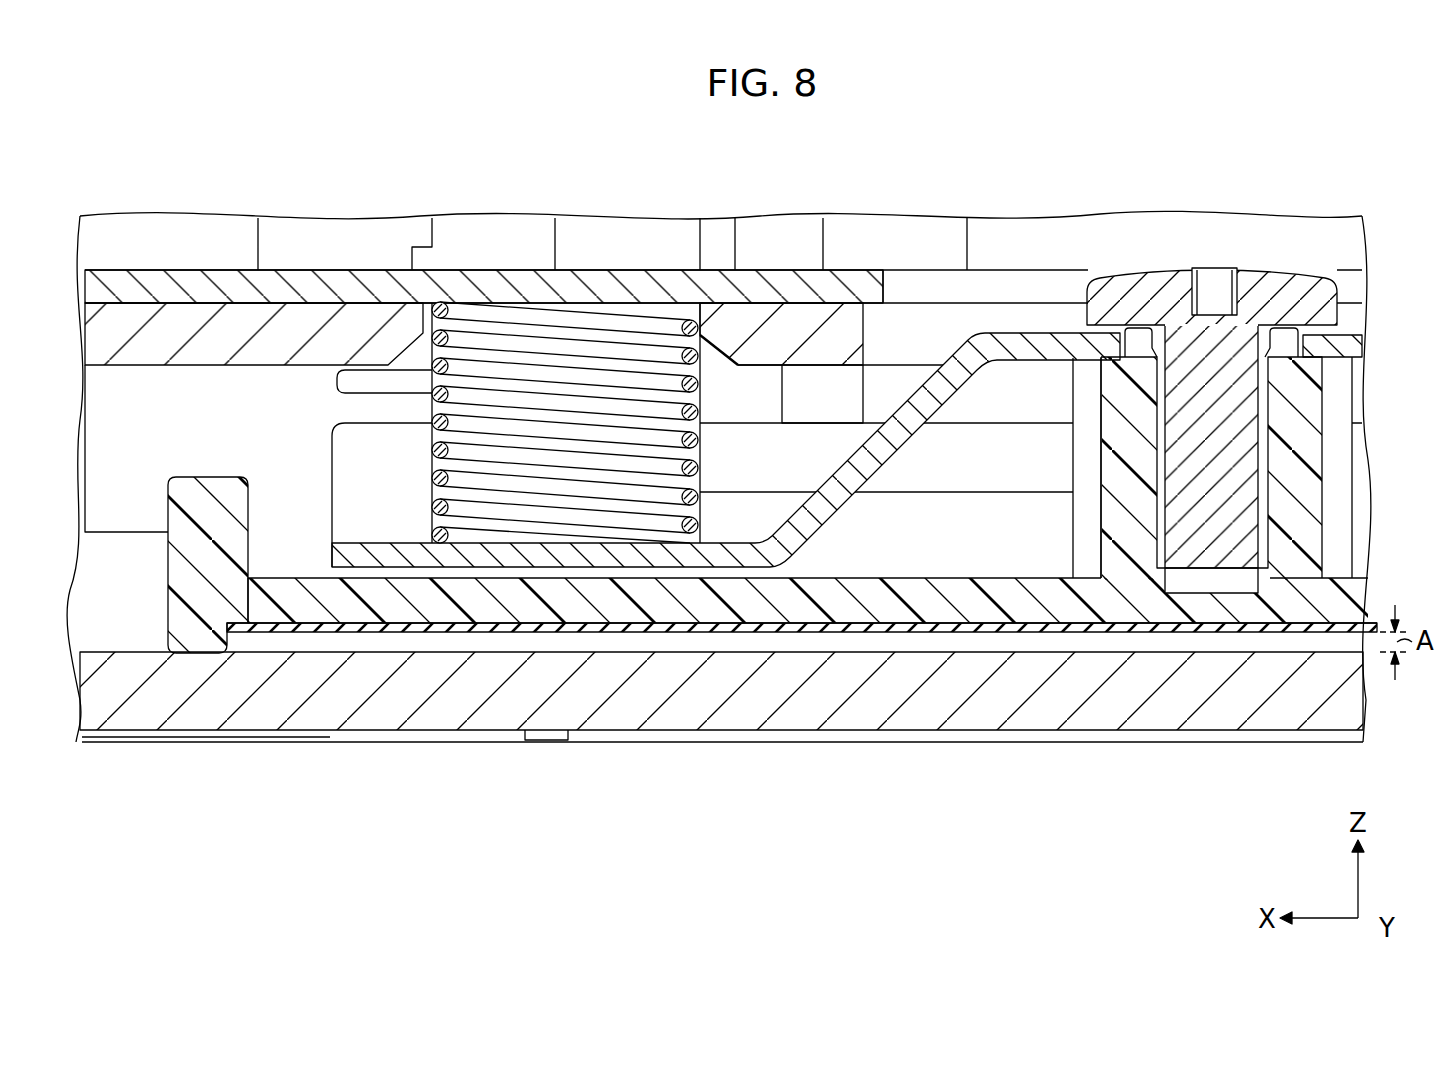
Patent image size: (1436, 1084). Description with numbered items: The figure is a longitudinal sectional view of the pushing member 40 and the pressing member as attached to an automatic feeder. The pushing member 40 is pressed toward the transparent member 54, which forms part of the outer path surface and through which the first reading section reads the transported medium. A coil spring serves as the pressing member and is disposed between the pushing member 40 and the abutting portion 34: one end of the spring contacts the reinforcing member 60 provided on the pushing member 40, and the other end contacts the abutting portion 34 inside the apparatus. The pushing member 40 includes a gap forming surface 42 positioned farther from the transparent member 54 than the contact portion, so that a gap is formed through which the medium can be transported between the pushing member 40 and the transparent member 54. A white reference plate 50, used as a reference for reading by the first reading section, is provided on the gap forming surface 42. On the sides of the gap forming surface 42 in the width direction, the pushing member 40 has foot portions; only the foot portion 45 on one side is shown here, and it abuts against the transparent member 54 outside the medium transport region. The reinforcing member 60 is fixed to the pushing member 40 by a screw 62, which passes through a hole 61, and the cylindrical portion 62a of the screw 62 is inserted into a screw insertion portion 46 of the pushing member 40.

The abutting portion 34 is at (368, 270).
The pushing member 40 is at (915, 578).
The gap forming surface 42 is at (303, 639).
The foot portion 45 is at (233, 645).
The screw insertion portion 46 is at (1273, 427).
The white reference plate 50 is at (1028, 633).
The transparent member 54 is at (838, 650).
The reinforcing member 60 is at (748, 543).
The hole 61 is at (1298, 345).
The screw 62 is at (1259, 359).
The cylindrical portion 62a is at (1222, 494).